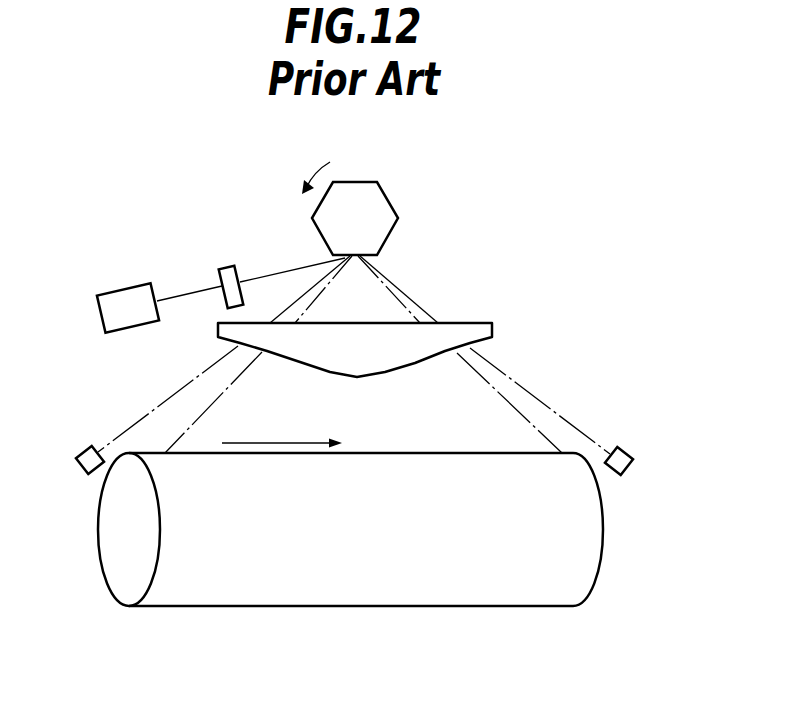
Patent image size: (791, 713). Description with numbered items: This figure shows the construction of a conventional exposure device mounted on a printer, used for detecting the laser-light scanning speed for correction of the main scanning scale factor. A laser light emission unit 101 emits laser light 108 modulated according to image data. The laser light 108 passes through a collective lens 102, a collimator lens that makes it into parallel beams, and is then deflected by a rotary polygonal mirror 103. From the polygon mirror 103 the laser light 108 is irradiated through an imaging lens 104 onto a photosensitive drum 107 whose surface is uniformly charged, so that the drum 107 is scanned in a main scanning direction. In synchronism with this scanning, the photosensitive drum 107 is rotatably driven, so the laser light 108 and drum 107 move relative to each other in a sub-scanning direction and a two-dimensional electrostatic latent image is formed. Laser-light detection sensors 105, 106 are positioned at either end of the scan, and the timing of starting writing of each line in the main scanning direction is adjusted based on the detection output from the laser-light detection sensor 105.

The laser light emission unit 101 is at (115, 292).
The collective lens 102 is at (227, 268).
The rotary polygonal mirror 103 is at (356, 182).
The imaging lens 104 is at (470, 323).
The laser-light detection sensor 105 is at (81, 450).
The laser-light detection sensor 106 is at (630, 449).
The photosensitive drum 107 is at (179, 607).
The laser light 108 is at (287, 271).